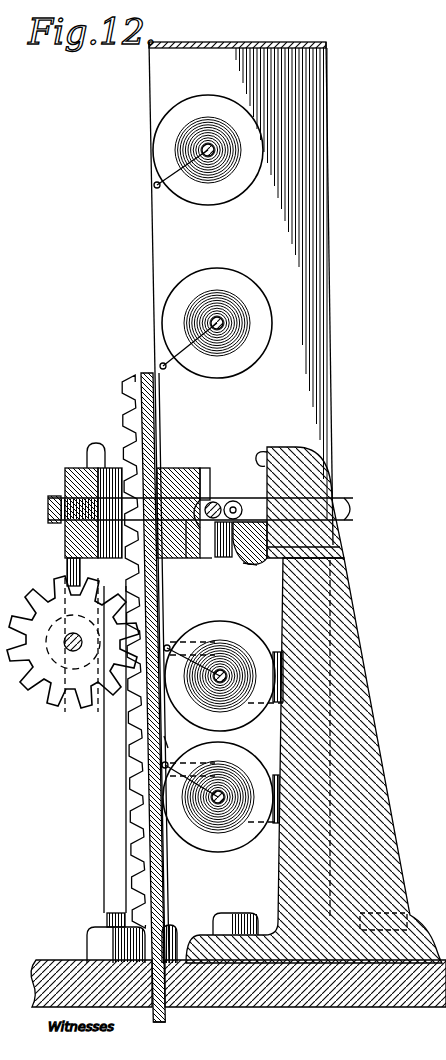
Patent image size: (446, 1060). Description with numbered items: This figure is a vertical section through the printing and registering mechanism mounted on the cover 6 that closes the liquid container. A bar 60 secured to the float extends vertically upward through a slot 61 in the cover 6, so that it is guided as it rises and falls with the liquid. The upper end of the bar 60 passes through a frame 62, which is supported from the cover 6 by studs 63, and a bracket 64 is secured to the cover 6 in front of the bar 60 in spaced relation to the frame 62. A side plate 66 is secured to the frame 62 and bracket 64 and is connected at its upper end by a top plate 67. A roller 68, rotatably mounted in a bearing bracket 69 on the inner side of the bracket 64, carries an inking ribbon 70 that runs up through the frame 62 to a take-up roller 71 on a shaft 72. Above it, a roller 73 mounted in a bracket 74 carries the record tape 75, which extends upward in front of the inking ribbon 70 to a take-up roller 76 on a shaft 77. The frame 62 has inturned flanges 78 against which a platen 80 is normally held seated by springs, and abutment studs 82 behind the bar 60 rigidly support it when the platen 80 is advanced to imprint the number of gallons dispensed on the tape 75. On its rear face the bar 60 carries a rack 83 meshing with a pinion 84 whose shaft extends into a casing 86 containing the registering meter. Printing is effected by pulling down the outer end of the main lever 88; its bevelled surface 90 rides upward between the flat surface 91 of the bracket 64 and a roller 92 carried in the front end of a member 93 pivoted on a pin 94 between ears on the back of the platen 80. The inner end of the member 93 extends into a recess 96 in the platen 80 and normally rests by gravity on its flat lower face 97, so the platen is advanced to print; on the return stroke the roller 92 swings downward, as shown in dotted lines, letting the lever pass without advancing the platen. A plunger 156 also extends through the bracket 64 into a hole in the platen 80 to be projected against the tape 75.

The cover 6 is at (354, 1000).
The bar 60 is at (163, 885).
The slot 61 is at (162, 990).
The frame 62 is at (72, 468).
The studs 63 is at (112, 745).
The bracket 64 is at (352, 716).
The side plate 66 is at (322, 386).
The top plate 67 is at (305, 43).
The roller 68 is at (225, 842).
The bearing bracket 69 is at (258, 838).
The inking ribbon 70 is at (186, 742).
The take-up roller 71 is at (241, 192).
The shaft 72 is at (208, 148).
The roller 73 is at (241, 714).
The bracket 74 is at (276, 652).
The record tape 75 is at (163, 412).
The take-up roller 76 is at (248, 362).
The shaft 77 is at (220, 321).
The inturned flanges 78 is at (223, 562).
The platen 80 is at (196, 466).
The abutment studs 82 is at (115, 500).
The rack 83 is at (133, 795).
The pinion 84 is at (57, 700).
The casing 86 is at (70, 638).
The main lever 88 is at (262, 542).
The bevelled surface 90 is at (250, 566).
The flat surface 91 is at (268, 448).
The roller 92 is at (243, 494).
The member 93 is at (203, 560).
The pin 94 is at (214, 504).
The recess 96 is at (172, 468).
The flat lower face 97 is at (186, 537).
The plunger 156 is at (335, 506).